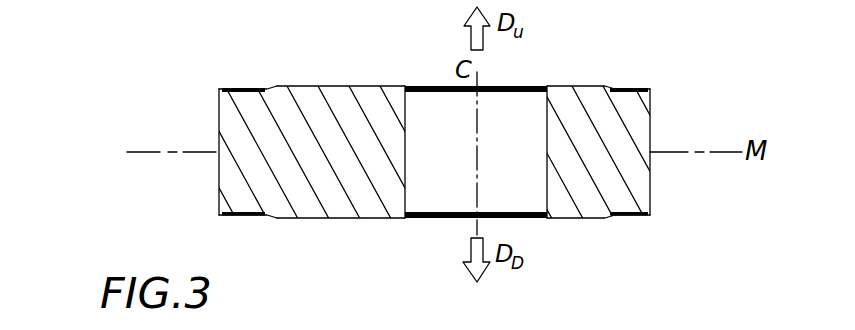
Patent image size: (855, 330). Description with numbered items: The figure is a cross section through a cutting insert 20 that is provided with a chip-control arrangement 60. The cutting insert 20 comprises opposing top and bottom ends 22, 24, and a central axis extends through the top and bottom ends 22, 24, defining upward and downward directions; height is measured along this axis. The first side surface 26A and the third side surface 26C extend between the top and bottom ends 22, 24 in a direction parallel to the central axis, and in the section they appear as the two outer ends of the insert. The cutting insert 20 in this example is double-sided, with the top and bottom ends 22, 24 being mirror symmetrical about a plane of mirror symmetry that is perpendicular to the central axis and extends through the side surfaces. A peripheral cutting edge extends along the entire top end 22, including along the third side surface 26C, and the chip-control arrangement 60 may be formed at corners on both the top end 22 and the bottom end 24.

The cutting insert 20 is at (152, 57).
The chip-control arrangement 60 is at (248, 68).
The top end 22 is at (333, 65).
The bottom end 24 is at (333, 240).
The first side surface 26A is at (650, 126).
The third side surface 26C is at (218, 127).